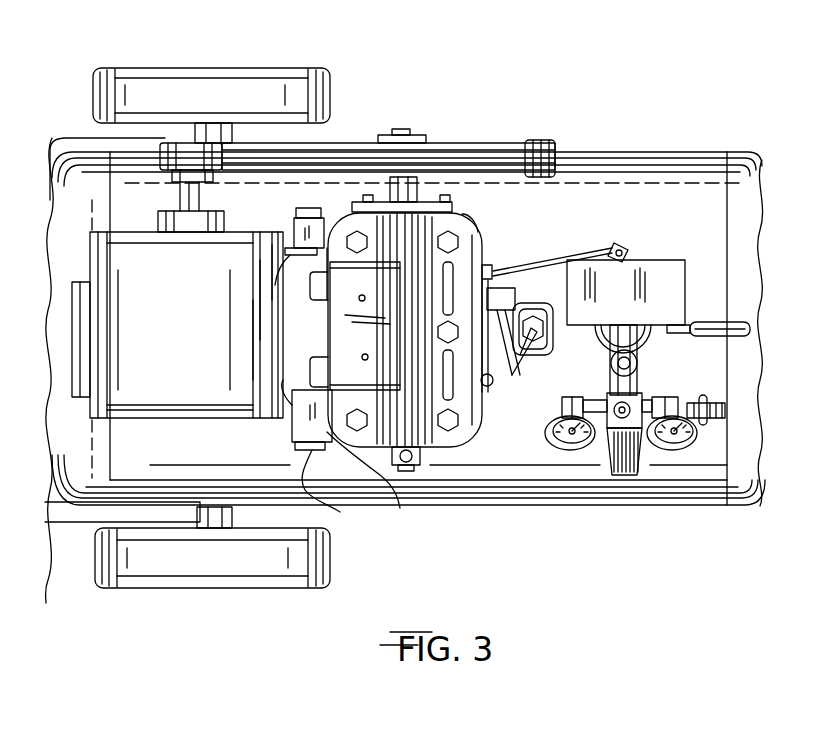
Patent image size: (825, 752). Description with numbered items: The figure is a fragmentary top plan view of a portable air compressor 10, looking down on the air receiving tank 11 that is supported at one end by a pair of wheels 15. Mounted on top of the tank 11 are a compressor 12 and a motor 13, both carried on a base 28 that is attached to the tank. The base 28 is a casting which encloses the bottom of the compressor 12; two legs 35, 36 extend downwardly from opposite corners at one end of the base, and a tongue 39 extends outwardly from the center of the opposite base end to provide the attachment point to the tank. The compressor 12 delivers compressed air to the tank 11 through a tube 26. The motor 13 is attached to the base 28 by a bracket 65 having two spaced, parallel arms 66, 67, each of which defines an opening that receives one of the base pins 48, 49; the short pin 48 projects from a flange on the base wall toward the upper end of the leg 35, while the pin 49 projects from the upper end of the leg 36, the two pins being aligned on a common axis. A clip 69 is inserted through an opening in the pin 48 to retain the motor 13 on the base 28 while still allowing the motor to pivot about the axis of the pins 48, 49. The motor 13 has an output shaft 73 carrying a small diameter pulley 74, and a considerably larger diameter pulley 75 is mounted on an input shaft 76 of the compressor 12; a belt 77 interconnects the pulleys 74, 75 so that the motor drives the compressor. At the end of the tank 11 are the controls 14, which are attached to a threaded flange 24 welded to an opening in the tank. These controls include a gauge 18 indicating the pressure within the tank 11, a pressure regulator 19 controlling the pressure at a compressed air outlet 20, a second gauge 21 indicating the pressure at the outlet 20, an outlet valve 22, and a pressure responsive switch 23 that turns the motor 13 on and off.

The portable air compressor 10 is at (614, 134).
The air receiving tank 11 is at (490, 482).
The compressor 12 is at (450, 430).
The motor 13 is at (78, 402).
The controls 14 is at (622, 477).
The wheels 15 is at (300, 75).
The gauge 18 is at (570, 450).
The pressure regulator 19 is at (641, 398).
The compressed air outlet 20 is at (725, 418).
The gauge 21 is at (672, 450).
The outlet valve 22 is at (705, 320).
The pressure responsive switch 23 is at (668, 262).
The threaded flange 24 is at (648, 333).
The tube 26 is at (540, 380).
The base 28 is at (372, 485).
The leg 35 is at (329, 494).
The leg 36 is at (301, 213).
The tongue 39 is at (560, 335).
The pin 48 is at (293, 425).
The pin 49 is at (300, 285).
The bracket 65 is at (278, 338).
The arm 66 is at (290, 367).
The arm 67 is at (298, 257).
The clip 69 is at (300, 428).
The output shaft 73 is at (205, 196).
The pulley 74 is at (180, 180).
The pulley 75 is at (488, 143).
The input shaft 76 is at (468, 188).
The belt 77 is at (437, 143).